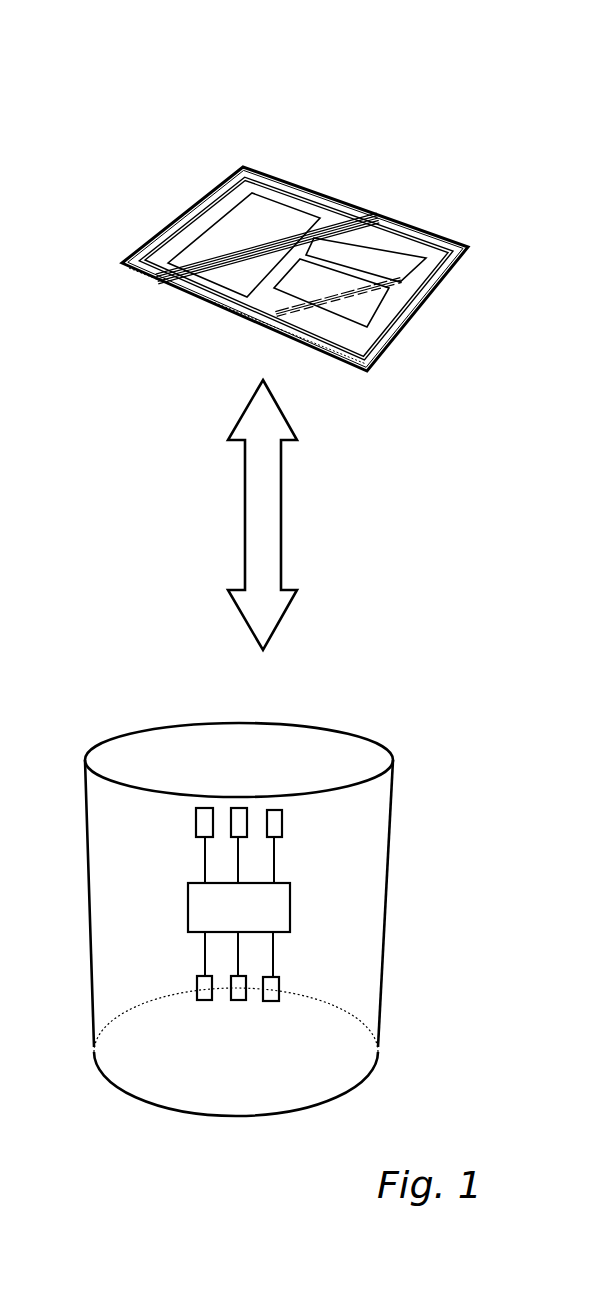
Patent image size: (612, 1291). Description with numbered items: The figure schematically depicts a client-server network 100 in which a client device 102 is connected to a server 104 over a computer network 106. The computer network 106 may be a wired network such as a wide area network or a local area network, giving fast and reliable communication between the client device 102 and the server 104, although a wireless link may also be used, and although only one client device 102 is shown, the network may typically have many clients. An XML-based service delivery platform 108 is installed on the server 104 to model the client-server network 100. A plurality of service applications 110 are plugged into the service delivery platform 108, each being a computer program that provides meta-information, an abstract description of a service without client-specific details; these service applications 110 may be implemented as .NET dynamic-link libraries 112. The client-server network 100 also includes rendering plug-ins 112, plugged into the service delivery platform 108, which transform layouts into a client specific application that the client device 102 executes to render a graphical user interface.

The client-server network 100 is at (148, 122).
The client device 102 is at (391, 204).
The server 104 is at (380, 997).
The computer network 106 is at (275, 515).
The service delivery platform 108 is at (285, 913).
The service applications 110 is at (203, 1002).
The rendering plug-ins 112 is at (205, 810).